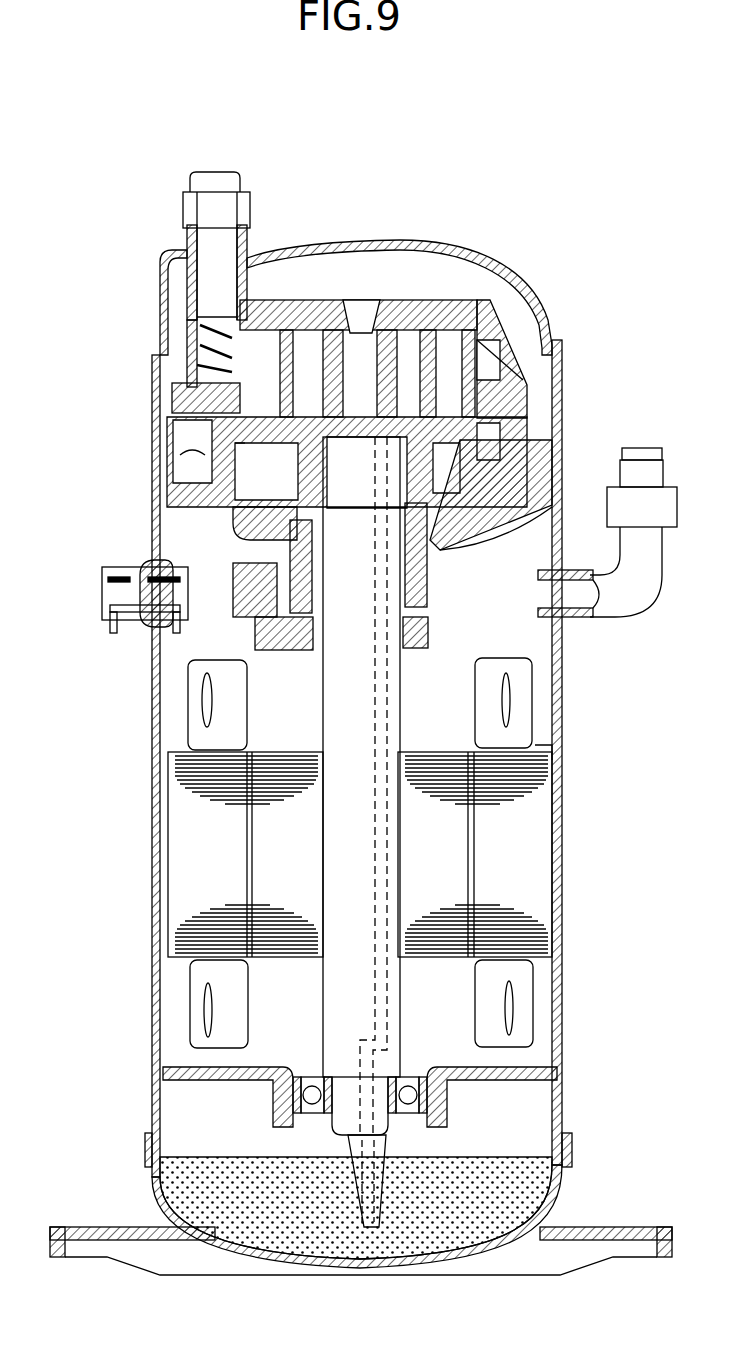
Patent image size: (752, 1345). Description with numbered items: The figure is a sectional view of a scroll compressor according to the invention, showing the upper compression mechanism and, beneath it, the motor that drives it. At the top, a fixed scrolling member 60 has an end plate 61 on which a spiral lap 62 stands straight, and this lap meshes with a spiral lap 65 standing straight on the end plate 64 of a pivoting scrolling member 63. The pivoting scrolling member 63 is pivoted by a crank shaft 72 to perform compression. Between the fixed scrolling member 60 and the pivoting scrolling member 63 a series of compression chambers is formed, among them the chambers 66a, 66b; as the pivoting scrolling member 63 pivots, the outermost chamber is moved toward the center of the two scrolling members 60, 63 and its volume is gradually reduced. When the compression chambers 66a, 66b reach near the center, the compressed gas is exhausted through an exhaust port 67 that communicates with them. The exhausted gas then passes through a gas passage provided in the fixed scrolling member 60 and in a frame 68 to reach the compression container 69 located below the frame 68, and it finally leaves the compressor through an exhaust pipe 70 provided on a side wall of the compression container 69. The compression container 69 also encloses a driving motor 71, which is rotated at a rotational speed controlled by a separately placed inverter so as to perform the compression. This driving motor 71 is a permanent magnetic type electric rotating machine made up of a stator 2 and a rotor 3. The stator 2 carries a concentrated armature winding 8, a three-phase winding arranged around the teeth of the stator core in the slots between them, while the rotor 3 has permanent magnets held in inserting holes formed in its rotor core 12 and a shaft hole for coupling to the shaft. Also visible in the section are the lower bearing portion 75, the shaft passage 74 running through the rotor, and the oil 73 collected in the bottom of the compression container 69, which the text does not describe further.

The stator 2 is at (188, 836).
The rotor 3 is at (283, 750).
The concentrated armature winding 8 is at (202, 695).
The rotor core 12 is at (290, 868).
The fixed scrolling member 60 is at (482, 298).
The end plate 61 is at (405, 305).
The spiral lap 62 is at (318, 335).
The pivoting scrolling member 63 is at (212, 448).
The end plate 64 is at (200, 420).
The spiral lap 65 is at (470, 382).
The compression chamber 66a is at (455, 353).
The compression chamber 66b is at (240, 368).
The exhaust port 67 is at (355, 340).
The frame 68 is at (240, 522).
The compression container 69 is at (565, 683).
The exhaust pipe 70 is at (640, 558).
The driving motor 71 is at (545, 748).
The crank shaft 72 is at (335, 617).
The lubricating oil 73 is at (487, 1163).
The drive shaft 74 is at (375, 1028).
The bearing 75 is at (465, 545).